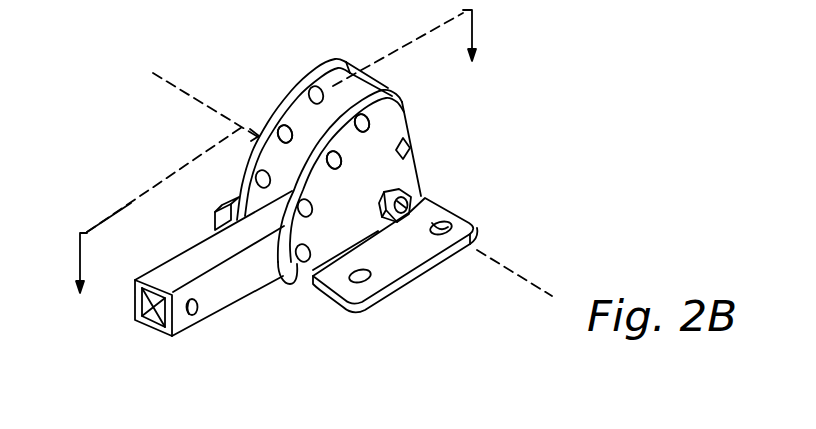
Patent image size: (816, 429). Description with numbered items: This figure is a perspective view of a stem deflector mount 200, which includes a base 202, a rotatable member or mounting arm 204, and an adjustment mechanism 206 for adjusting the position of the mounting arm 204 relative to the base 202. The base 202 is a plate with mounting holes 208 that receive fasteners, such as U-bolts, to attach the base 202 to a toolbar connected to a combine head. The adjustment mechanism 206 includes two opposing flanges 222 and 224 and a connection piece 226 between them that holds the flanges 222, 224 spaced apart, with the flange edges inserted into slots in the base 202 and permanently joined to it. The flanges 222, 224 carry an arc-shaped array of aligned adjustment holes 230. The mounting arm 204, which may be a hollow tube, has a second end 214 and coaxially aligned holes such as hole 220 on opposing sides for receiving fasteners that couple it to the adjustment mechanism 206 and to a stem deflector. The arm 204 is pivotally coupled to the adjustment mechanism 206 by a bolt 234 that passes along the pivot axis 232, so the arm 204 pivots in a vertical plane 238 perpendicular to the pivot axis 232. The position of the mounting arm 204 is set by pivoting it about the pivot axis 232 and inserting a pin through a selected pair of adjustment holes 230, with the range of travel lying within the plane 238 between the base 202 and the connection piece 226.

The stem deflector mount 200 is at (541, 93).
The base 202 is at (438, 290).
The rotatable member (mounting arm) 204 is at (254, 304).
The adjustment mechanism 206 is at (242, 103).
The mounting holes 208 is at (370, 278).
The second end 214 is at (163, 278).
The hole 220 is at (193, 313).
The flange 222 is at (262, 158).
The flange 224 is at (393, 125).
The connection piece 226 is at (360, 76).
The adjustment holes 230 is at (359, 118).
The pivot axis 232 is at (497, 264).
The bolt 234 is at (420, 189).
The vertical plane 238 is at (131, 204).